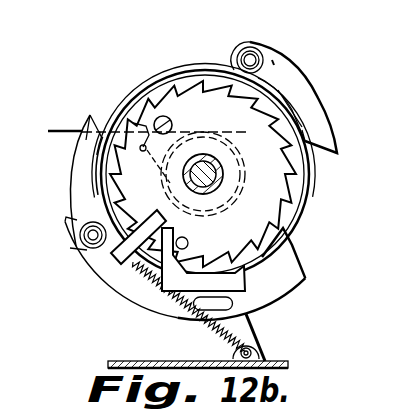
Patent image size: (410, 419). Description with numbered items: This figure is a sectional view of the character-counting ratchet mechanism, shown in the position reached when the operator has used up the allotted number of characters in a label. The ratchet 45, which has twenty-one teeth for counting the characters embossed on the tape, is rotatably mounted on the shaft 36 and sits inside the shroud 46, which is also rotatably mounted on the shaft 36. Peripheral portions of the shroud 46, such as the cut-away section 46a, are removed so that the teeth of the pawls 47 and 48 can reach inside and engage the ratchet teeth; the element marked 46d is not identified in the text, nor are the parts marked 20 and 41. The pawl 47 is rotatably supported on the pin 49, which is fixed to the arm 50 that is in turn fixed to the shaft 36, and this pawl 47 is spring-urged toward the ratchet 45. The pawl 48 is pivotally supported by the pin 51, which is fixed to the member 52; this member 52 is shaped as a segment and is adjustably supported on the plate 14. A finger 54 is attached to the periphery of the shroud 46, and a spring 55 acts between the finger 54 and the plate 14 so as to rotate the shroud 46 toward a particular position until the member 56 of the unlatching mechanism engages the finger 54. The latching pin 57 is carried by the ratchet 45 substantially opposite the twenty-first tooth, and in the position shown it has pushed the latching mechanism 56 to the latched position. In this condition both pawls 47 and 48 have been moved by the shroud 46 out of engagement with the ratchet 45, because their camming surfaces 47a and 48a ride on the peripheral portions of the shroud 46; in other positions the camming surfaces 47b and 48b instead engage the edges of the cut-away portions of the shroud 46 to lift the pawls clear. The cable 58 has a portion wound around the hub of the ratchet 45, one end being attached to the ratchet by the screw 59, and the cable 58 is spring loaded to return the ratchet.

The plate 14 is at (110, 362).
The frame 20 is at (336, 411).
The shaft 36 is at (218, 189).
The ratchet wheel 41 is at (252, 227).
The ratchet 45 is at (188, 246).
The shroud 46 is at (228, 141).
The cut-away section of shroud periphery 46a is at (311, 197).
The ring flange 46d is at (137, 88).
The pawl 47 is at (315, 112).
The camming surface 47a is at (281, 101).
The camming surface 47b is at (324, 152).
The pawl 48 is at (60, 154).
The camming surface 48a is at (95, 178).
The camming surface 48b is at (90, 104).
The pin 49 is at (259, 48).
The arm 50 is at (255, 57).
The pin 51 is at (88, 238).
The member 52 is at (125, 283).
The finger 54 is at (140, 243).
The spring 55 is at (251, 345).
The member of the unlatching mechanism 56 is at (260, 316).
The latching pin 57 is at (225, 287).
The cable 58 is at (66, 130).
The screw 59 is at (158, 115).